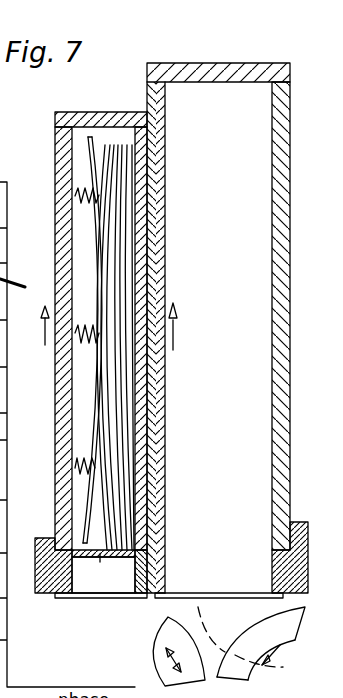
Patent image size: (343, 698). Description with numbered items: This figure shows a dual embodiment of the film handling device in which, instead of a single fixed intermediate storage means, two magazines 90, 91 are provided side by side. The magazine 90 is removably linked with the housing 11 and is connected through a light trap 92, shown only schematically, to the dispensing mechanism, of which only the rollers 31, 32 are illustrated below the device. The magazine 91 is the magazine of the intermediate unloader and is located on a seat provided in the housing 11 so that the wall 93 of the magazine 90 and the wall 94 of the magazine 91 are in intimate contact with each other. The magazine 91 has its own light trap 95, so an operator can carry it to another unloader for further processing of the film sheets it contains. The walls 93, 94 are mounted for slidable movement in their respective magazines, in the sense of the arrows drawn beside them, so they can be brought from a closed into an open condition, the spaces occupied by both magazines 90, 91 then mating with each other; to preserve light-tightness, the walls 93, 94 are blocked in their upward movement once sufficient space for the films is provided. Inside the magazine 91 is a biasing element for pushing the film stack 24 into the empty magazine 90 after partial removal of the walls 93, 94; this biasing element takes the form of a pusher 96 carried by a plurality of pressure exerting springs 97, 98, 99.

The housing 11 is at (50, 584).
The film stack 24 is at (120, 232).
The roller 31 is at (165, 637).
The roller 32 is at (268, 636).
The magazine 90 is at (252, 124).
The magazine 91 is at (98, 123).
The light trap 92 is at (198, 593).
The wall 93 is at (157, 423).
The wall 94 is at (140, 368).
The light trap 95 is at (103, 573).
The pusher 96 is at (92, 158).
The pressure exerting spring 97 is at (78, 200).
The pressure exerting spring 98 is at (90, 346).
The pressure exerting spring 99 is at (84, 481).